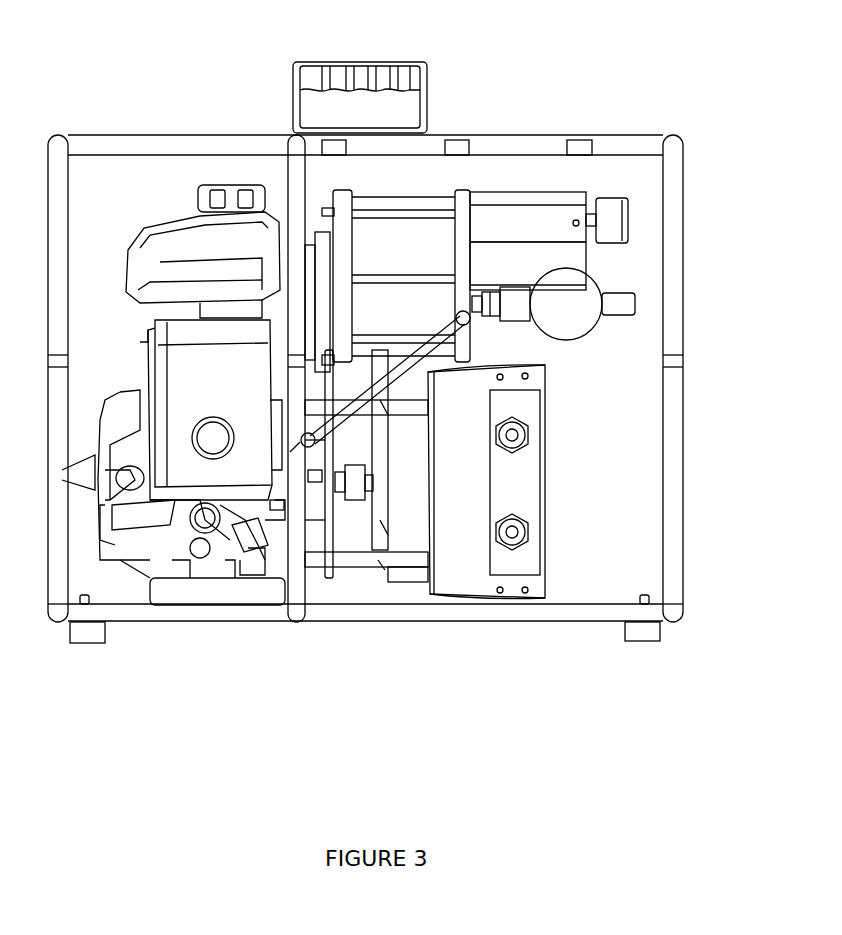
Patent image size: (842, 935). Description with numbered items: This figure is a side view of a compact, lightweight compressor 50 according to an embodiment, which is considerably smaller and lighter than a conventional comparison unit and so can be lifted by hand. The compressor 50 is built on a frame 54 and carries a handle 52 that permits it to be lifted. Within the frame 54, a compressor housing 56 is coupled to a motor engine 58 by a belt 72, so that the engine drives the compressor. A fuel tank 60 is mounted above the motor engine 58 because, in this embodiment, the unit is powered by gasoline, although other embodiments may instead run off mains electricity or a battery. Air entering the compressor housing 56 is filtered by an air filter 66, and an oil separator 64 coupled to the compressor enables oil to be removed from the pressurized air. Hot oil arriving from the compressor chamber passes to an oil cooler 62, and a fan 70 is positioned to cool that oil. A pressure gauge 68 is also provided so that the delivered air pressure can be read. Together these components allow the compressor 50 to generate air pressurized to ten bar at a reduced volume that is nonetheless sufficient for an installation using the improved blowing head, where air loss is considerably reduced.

The compressor 50 is at (574, 52).
The handle 52 is at (427, 62).
The frame 54 is at (684, 323).
The compressor housing 56 is at (387, 281).
The motor engine 58 is at (173, 462).
The fuel tank 60 is at (203, 251).
The oil cooler 62 is at (486, 482).
The oil separator 64 is at (528, 241).
The air filter 66 is at (553, 304).
The pressure gauge 68 is at (612, 206).
The fan 70 is at (398, 582).
The belt 72 is at (313, 316).